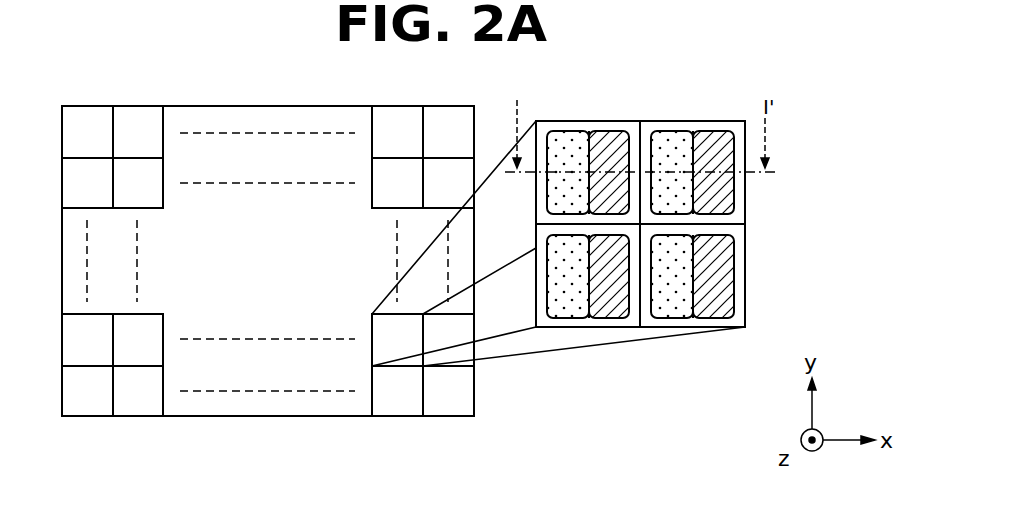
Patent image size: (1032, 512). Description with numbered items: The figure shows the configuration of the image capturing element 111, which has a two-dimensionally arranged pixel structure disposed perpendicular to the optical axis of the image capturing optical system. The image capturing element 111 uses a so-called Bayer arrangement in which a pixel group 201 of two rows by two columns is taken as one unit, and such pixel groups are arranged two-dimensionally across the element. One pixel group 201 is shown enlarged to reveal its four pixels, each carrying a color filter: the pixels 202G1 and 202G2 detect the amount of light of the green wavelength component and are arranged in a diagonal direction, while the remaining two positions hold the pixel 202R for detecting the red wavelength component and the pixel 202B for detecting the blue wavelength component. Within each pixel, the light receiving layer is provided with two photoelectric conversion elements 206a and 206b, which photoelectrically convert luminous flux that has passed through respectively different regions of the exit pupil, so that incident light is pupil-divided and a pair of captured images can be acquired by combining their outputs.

The image capturing element 111 is at (265, 106).
The pixel group 201 is at (400, 367).
The pixel 202G1 is at (586, 121).
The pixel 202R is at (691, 121).
The pixel 202B is at (590, 327).
The pixel 202G2 is at (740, 310).
The photoelectric conversion element 206a is at (678, 300).
The photoelectric conversion element 206b is at (725, 260).